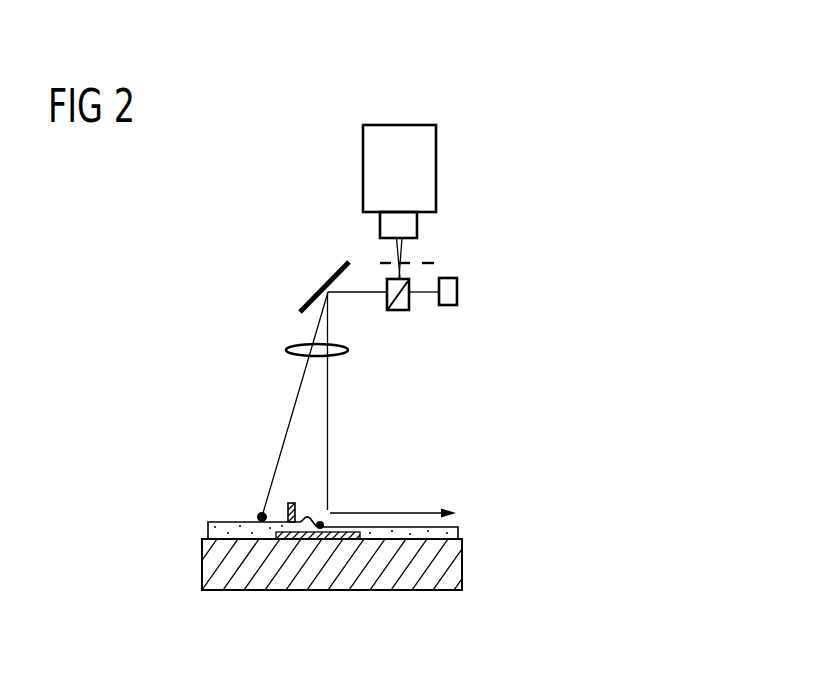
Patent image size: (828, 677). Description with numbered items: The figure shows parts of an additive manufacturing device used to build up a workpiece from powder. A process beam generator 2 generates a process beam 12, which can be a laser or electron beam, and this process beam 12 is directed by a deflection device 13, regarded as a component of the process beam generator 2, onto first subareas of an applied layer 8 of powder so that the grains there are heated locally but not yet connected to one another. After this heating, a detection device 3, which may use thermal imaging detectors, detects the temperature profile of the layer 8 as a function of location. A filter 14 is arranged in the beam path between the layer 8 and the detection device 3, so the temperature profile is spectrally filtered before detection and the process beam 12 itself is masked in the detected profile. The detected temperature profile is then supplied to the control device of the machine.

The process beam generator 2 is at (457, 292).
The detection device 3 is at (436, 167).
The layer 8 is at (458, 530).
The process beam 12 is at (368, 293).
The deflection device 13 is at (318, 286).
The filter 14 is at (428, 264).